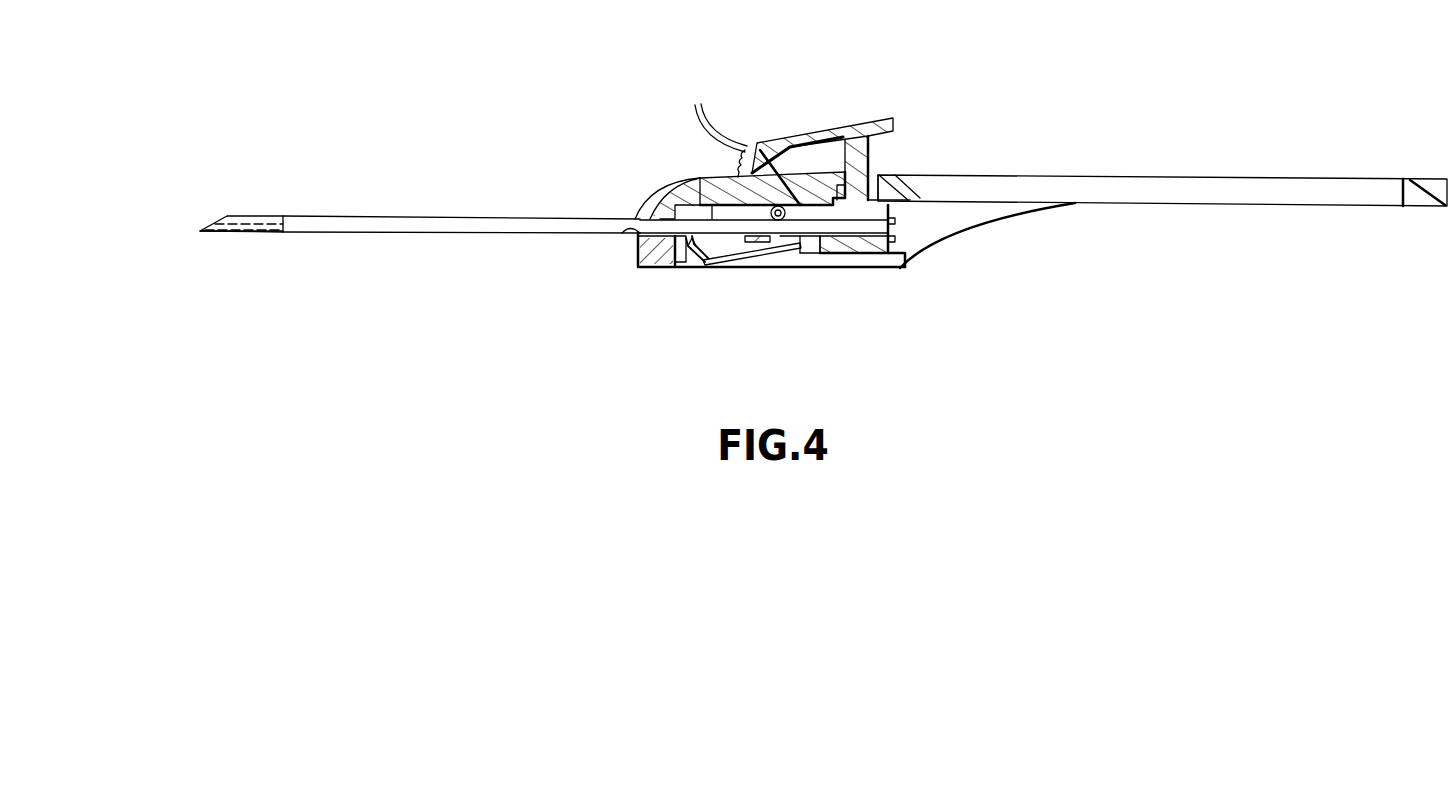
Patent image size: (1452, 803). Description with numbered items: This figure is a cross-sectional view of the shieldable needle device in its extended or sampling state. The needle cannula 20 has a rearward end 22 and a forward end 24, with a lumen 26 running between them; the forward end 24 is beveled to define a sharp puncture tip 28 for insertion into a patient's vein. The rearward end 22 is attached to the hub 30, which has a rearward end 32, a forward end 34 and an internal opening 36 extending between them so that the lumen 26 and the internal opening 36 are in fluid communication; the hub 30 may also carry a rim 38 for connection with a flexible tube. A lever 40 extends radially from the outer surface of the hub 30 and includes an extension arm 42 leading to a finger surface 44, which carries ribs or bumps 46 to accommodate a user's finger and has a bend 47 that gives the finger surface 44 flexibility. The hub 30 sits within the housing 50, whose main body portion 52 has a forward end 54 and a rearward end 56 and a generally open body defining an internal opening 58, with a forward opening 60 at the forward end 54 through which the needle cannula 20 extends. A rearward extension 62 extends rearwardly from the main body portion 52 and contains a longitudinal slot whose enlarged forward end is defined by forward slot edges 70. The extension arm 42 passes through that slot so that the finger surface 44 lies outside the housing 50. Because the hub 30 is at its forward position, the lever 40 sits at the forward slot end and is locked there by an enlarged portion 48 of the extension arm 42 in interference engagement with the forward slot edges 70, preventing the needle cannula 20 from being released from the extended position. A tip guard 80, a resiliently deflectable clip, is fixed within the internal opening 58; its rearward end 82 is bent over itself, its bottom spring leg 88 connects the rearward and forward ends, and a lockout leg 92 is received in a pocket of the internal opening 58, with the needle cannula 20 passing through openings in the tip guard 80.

The needle cannula 20 is at (446, 215).
The rearward end 22 is at (816, 254).
The forward end 24 is at (290, 188).
The lumen 26 is at (262, 220).
The puncture tip 28 is at (200, 232).
The hub 30 is at (868, 254).
The rearward end 32 is at (897, 262).
The forward end 34 is at (806, 258).
The internal opening 36 is at (896, 222).
The rim 38 is at (896, 240).
The lever 40 is at (808, 116).
The extension arm 42 is at (872, 148).
The finger surface 44 is at (775, 141).
The ribs or bumps 46 is at (714, 113).
The bend 47 is at (755, 145).
The enlarged portion 48 is at (958, 226).
The housing 50 is at (690, 200).
The main body portion 52 is at (700, 188).
The hub shoulder 54 is at (605, 200).
The rearward end 56 is at (783, 185).
The internal opening 58 is at (795, 240).
The forward opening 60 is at (636, 232).
The rearward extension 62 is at (1368, 158).
The forward slot edges 70 is at (884, 186).
The tip guard 80 is at (742, 264).
The rearward end 82 is at (745, 262).
The bottom spring leg 88 is at (716, 258).
The lockout leg 92 is at (690, 264).